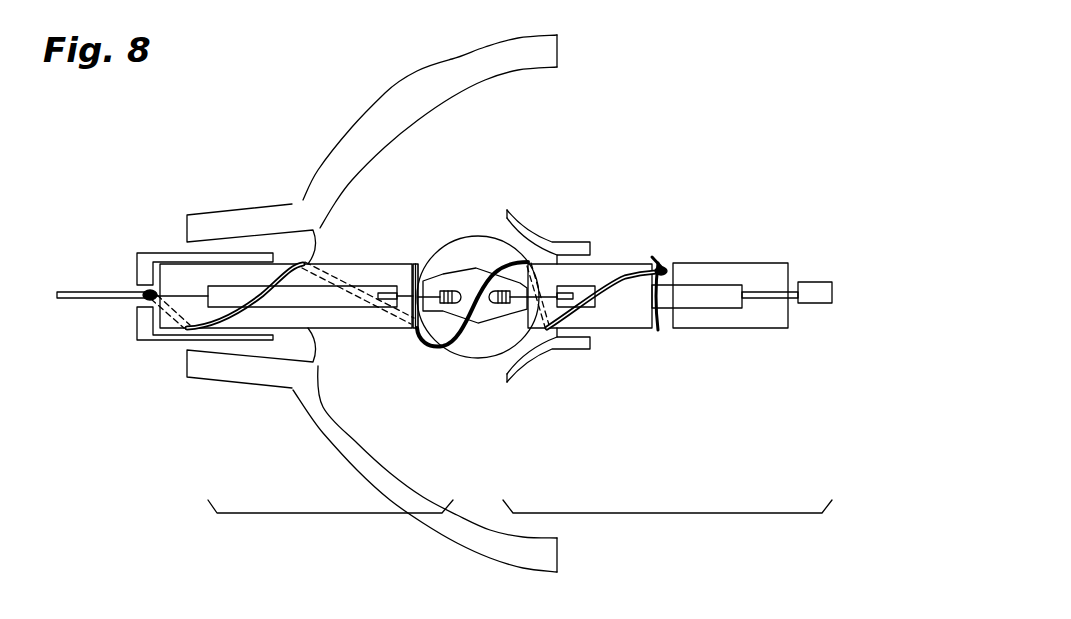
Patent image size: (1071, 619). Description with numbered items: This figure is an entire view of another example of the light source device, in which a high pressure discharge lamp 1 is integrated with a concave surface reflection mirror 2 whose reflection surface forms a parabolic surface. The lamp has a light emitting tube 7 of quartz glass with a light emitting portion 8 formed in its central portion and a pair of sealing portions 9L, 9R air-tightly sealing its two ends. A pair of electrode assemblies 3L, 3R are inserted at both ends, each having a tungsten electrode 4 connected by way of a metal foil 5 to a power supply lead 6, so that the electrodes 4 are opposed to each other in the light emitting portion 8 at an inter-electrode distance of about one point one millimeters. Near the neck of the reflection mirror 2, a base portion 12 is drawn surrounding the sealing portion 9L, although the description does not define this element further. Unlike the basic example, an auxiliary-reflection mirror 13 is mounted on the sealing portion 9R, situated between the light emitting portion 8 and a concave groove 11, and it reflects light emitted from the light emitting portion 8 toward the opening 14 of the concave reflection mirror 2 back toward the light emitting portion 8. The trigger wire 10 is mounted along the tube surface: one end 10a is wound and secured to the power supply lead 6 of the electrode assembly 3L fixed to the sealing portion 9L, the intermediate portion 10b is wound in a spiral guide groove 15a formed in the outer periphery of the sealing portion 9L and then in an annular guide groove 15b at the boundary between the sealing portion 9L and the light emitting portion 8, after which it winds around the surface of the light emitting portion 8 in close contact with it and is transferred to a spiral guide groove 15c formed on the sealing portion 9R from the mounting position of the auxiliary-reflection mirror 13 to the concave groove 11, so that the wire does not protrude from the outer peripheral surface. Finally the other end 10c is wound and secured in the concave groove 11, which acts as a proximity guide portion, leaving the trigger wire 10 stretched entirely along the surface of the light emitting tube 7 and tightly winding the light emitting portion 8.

The high pressure discharge lamp 1 is at (606, 215).
The concave surface reflection mirror 2 is at (408, 60).
The electrode assembly 3L is at (330, 528).
The electrode assembly 3R is at (667, 528).
The tungsten electrode 4 is at (450, 310).
The metal foil 5 is at (300, 302).
The power supply lead 6 is at (87, 300).
The light emitting tube 7 is at (377, 251).
The light emitting portion 8 is at (433, 252).
The sealing portion 9L is at (190, 272).
The sealing portion 9R is at (760, 268).
The trigger wire 10 is at (501, 254).
The one end of trigger wire 10a is at (143, 292).
The intermediate portion of trigger wire 10b is at (478, 292).
The other end of trigger wire 10c is at (665, 256).
The concave groove 11 is at (670, 342).
The base portion 12 is at (268, 240).
The auxiliary-reflection mirror 13 is at (528, 201).
The opening 14 is at (558, 86).
The spiral guide groove 15a is at (247, 307).
The annular guide groove 15b is at (416, 330).
The spiral guide groove 15c is at (593, 310).